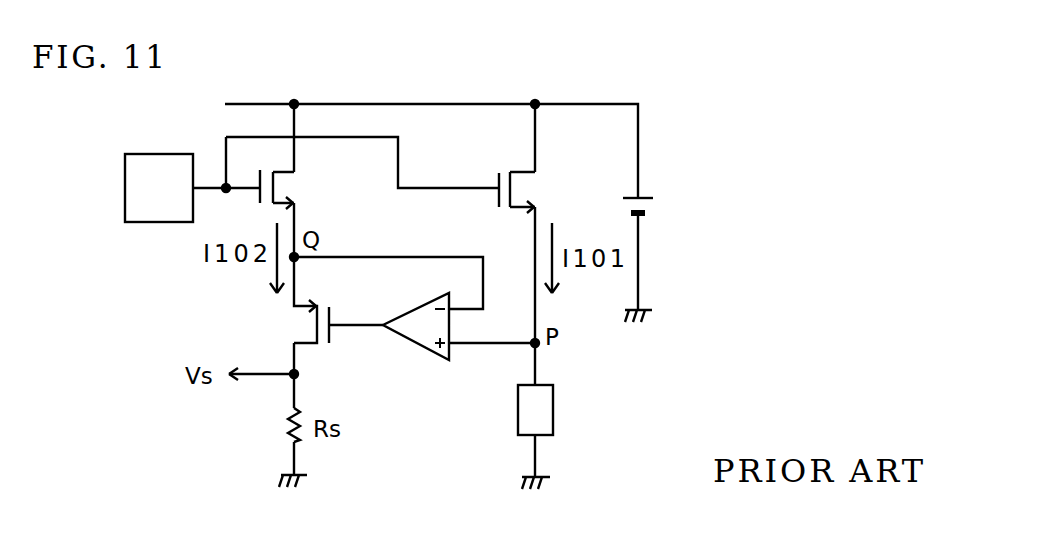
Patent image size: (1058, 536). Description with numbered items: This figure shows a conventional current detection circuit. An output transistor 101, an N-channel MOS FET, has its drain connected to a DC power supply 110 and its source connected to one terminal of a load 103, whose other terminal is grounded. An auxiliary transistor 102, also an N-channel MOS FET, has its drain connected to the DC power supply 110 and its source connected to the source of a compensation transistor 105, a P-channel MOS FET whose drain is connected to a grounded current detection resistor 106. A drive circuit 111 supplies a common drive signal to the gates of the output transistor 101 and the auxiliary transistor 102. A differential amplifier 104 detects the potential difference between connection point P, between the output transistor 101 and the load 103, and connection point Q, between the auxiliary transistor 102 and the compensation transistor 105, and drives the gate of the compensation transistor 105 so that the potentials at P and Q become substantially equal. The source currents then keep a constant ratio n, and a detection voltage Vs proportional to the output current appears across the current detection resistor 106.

The output transistor 101 is at (532, 190).
The auxiliary transistor 102 is at (293, 185).
The load 103 is at (553, 383).
The differential amplifier 104 is at (435, 352).
The compensation transistor 105 is at (295, 326).
The current detection resistor 106 is at (292, 412).
The DC power supply 110 is at (647, 198).
The drive circuit 111 is at (153, 223).